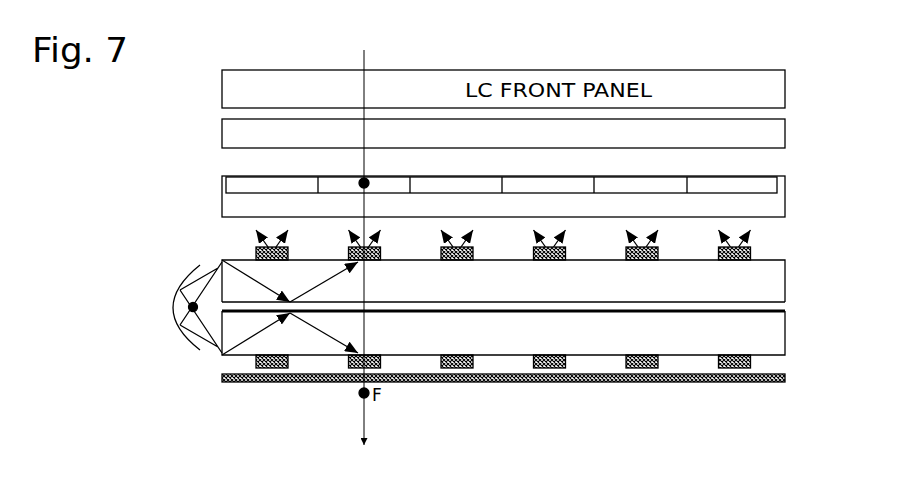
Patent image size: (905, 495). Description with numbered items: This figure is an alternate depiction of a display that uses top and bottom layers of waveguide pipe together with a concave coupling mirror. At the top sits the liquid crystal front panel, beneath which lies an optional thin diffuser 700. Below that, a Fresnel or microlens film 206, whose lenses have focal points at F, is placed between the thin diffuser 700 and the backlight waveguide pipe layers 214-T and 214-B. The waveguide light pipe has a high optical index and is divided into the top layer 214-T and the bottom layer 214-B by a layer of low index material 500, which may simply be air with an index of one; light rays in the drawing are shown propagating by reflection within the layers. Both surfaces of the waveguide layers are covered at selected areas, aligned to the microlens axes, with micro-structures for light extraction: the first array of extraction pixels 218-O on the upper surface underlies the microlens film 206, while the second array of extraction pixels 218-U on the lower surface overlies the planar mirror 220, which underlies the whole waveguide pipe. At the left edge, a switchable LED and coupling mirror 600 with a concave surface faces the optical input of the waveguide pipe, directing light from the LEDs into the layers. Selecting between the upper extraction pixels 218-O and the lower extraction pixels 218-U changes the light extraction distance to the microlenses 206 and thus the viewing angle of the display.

The thin diffuser 700 is at (503, 133).
The Fresnel or microlens film 206 is at (436, 184).
The first array of extraction pixels 218-O is at (253, 251).
The top waveguide pipe layer 214-T is at (503, 281).
The low index layer 500 is at (470, 307).
The bottom waveguide pipe layer 214-B is at (503, 333).
The mirror 600 is at (160, 343).
The second array of extraction pixels 218-U is at (257, 361).
The planar mirror 220 is at (622, 382).